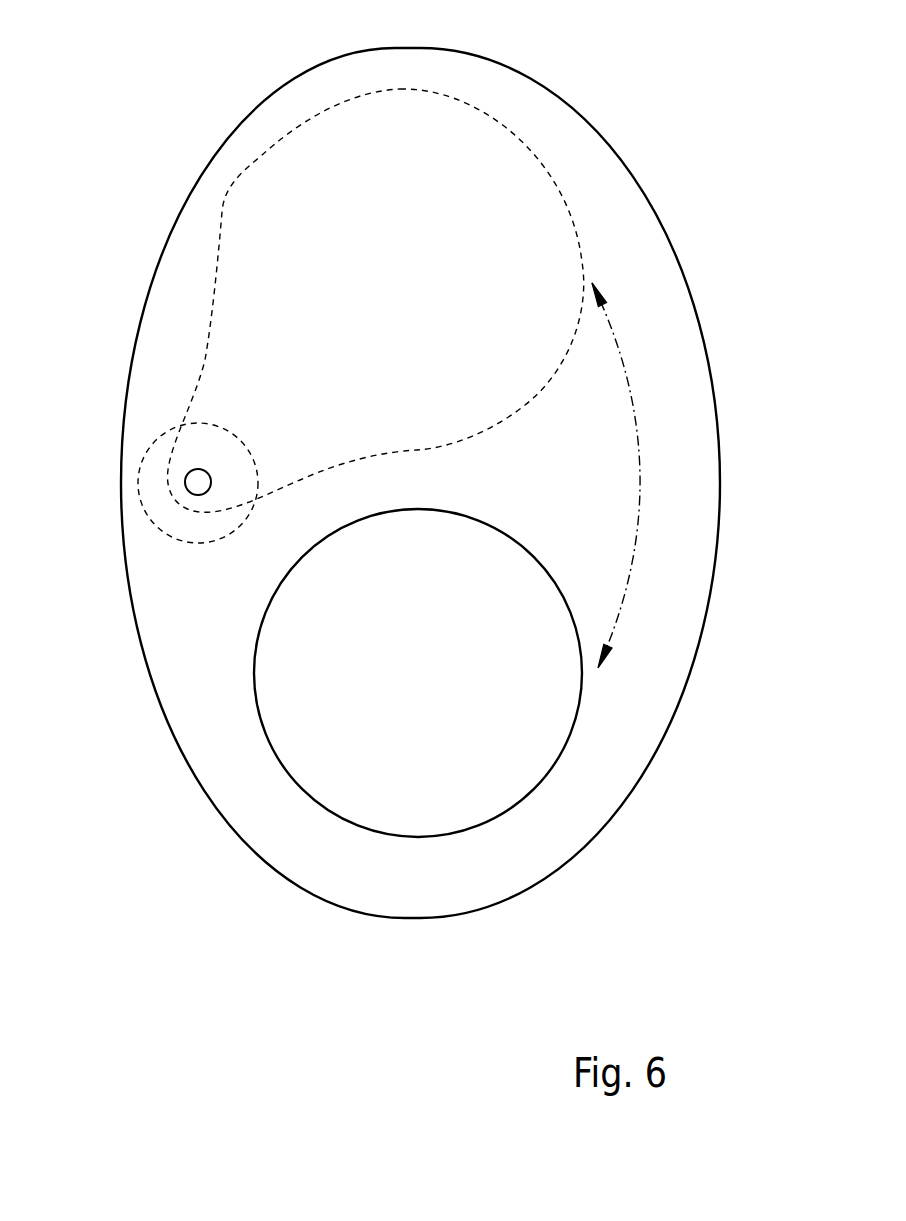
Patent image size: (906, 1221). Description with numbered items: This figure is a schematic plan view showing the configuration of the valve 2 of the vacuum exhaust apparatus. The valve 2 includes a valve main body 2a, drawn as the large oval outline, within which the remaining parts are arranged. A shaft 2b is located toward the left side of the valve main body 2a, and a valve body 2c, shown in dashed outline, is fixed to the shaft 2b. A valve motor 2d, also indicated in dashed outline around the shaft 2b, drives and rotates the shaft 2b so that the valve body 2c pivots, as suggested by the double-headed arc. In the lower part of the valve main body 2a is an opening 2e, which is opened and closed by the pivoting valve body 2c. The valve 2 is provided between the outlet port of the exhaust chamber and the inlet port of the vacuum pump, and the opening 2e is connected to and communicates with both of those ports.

The valve 2 is at (696, 108).
The valve main body 2a is at (637, 283).
The shaft 2b is at (186, 492).
The valve body 2c is at (228, 210).
The valve motor 2d is at (178, 428).
The opening 2e is at (548, 775).